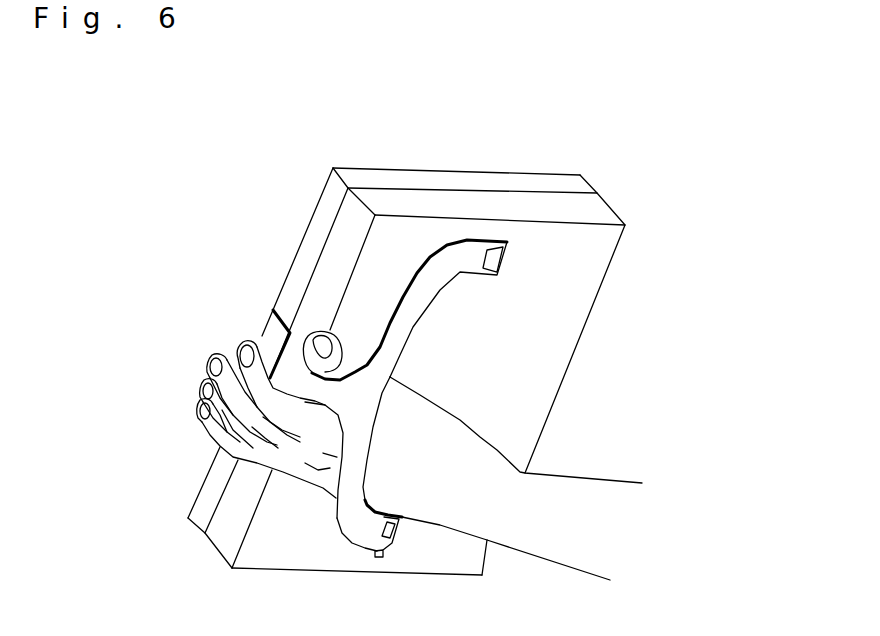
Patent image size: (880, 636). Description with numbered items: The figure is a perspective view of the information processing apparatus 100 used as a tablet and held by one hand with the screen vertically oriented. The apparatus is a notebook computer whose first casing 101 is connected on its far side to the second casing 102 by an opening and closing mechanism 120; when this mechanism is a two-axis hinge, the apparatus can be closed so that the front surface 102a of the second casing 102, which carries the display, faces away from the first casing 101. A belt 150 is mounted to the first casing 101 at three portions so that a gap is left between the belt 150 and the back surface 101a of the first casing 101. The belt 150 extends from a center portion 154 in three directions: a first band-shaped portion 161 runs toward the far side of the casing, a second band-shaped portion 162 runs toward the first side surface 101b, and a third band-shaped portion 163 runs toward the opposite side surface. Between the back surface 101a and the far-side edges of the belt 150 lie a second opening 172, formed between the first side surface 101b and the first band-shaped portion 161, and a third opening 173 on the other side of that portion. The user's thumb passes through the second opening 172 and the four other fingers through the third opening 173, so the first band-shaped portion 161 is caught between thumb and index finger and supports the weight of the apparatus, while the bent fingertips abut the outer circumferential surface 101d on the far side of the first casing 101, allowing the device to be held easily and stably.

The information processing apparatus 100 is at (376, 122).
The first casing 101 is at (560, 386).
The back surface 101a is at (583, 293).
The first side surface 101b is at (588, 213).
The outer circumferential surface 101d is at (220, 543).
The second casing 102 is at (415, 168).
The front surface 102a is at (551, 172).
The opening and closing mechanism 120 is at (262, 334).
The belt 150 is at (460, 257).
The center portion 154 is at (372, 400).
The first band-shaped portion 161 is at (335, 400).
The second band-shaped portion 162 is at (427, 282).
The third band-shaped portion 163 is at (350, 477).
The second opening 172 is at (383, 315).
The third opening 173 is at (333, 503).